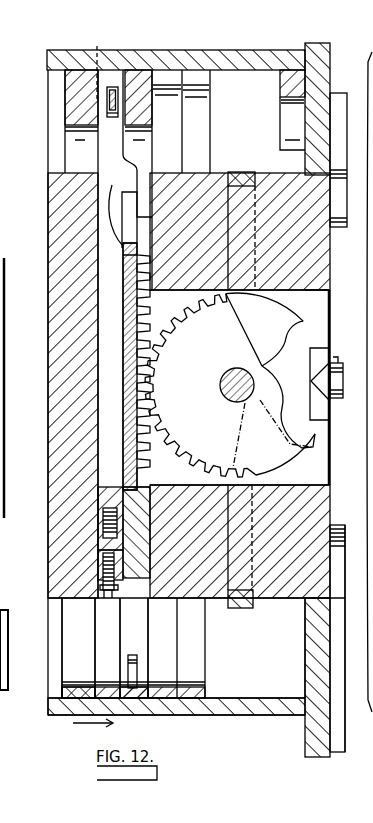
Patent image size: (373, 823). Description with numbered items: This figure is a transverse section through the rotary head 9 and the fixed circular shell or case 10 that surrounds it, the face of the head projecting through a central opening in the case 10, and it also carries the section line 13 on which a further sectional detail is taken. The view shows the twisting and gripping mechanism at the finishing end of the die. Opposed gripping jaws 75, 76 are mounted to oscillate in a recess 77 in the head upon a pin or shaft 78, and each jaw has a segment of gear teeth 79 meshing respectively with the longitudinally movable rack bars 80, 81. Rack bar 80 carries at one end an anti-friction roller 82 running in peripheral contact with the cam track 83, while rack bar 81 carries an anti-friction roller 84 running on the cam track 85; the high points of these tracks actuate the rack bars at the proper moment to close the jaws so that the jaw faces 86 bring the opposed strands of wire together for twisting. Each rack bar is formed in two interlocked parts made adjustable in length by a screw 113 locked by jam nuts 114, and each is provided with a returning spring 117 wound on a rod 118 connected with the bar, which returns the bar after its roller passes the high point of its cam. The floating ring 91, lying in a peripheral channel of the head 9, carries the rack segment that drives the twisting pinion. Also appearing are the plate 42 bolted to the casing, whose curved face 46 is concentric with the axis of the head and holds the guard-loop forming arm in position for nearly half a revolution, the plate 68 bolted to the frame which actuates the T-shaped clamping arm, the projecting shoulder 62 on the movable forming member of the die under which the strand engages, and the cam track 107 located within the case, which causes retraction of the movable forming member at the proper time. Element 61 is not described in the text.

The head 9 is at (372, 247).
The circular shell or case 10 is at (286, 716).
The section line 13— 13 is at (91, 393).
The plate 42 is at (345, 629).
The curved face 46 is at (333, 584).
The bottom lining 61 is at (68, 688).
The projecting shoulder 62 is at (337, 363).
The plate 68 is at (347, 156).
The gripping jaw 75 is at (230, 385).
The gripping jaw 76 is at (256, 342).
The recess 77 is at (321, 300).
The pin or shaft 78 is at (233, 394).
The segment of gear teeth 79 is at (159, 338).
The rack bar 80 is at (127, 463).
The rack bar 81 is at (134, 648).
The anti-friction roller 82 is at (111, 115).
The cam track 83 is at (66, 81).
The anti-friction roller 84 is at (132, 655).
The cam track 85 is at (143, 688).
The jaw faces 86 is at (290, 324).
The floating ring 91 is at (241, 167).
The cam track 107 is at (279, 88).
The screw 113 is at (81, 648).
The jam nuts 114 is at (100, 530).
The returning spring 117 is at (150, 298).
The rod 118 is at (130, 159).